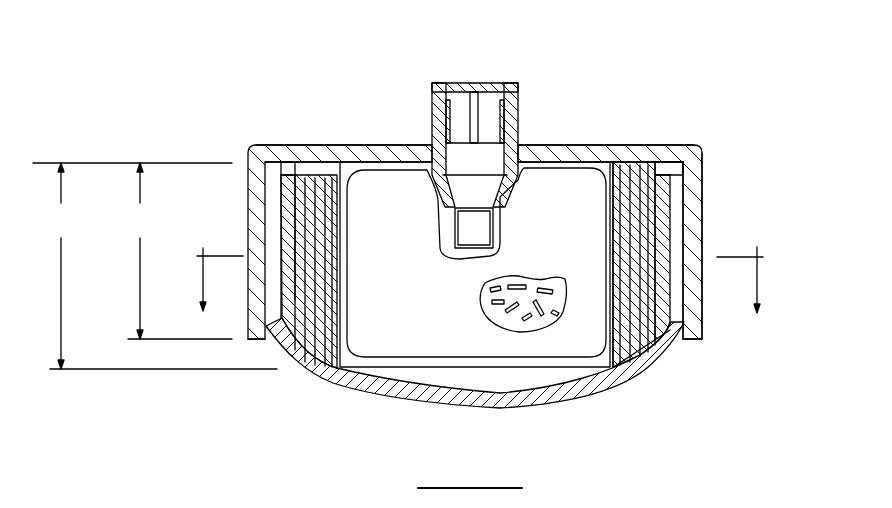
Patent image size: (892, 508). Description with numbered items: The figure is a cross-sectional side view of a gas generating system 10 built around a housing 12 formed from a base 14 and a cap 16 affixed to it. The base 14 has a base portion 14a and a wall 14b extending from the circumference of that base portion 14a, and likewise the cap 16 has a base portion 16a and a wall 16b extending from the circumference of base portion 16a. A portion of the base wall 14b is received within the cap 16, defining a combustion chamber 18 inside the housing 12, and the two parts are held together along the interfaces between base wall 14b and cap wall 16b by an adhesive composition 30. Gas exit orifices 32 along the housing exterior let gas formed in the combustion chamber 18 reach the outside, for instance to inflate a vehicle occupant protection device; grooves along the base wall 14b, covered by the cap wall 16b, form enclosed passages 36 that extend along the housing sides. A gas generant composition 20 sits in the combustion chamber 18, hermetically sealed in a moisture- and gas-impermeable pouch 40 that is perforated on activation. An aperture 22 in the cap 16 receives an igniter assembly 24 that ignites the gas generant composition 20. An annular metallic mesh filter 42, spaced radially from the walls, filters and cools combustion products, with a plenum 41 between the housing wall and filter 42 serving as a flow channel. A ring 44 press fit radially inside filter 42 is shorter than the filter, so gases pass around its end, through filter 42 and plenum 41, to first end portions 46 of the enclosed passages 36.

The gas generating system 10 is at (197, 209).
The housing 12 is at (670, 142).
The base 14 is at (376, 402).
The base portion 14a is at (323, 373).
The wall 14b is at (683, 295).
The cap 16 is at (703, 163).
The base portion 16a is at (690, 143).
The wall 16b is at (703, 232).
The combustion chamber 18 is at (345, 172).
The gas generant composition 20 is at (481, 304).
The aperture 22 is at (503, 155).
The igniter assembly 24 is at (432, 96).
The adhesive composition 30 is at (703, 203).
The gas exit orifices 32 is at (273, 338).
The enclosed passages 36 is at (272, 188).
The pouch 40 is at (592, 354).
The plenum 41 is at (287, 170).
The annular metallic mesh filter 42 is at (645, 357).
The ring 44 is at (605, 157).
The first end portions 46 is at (662, 187).